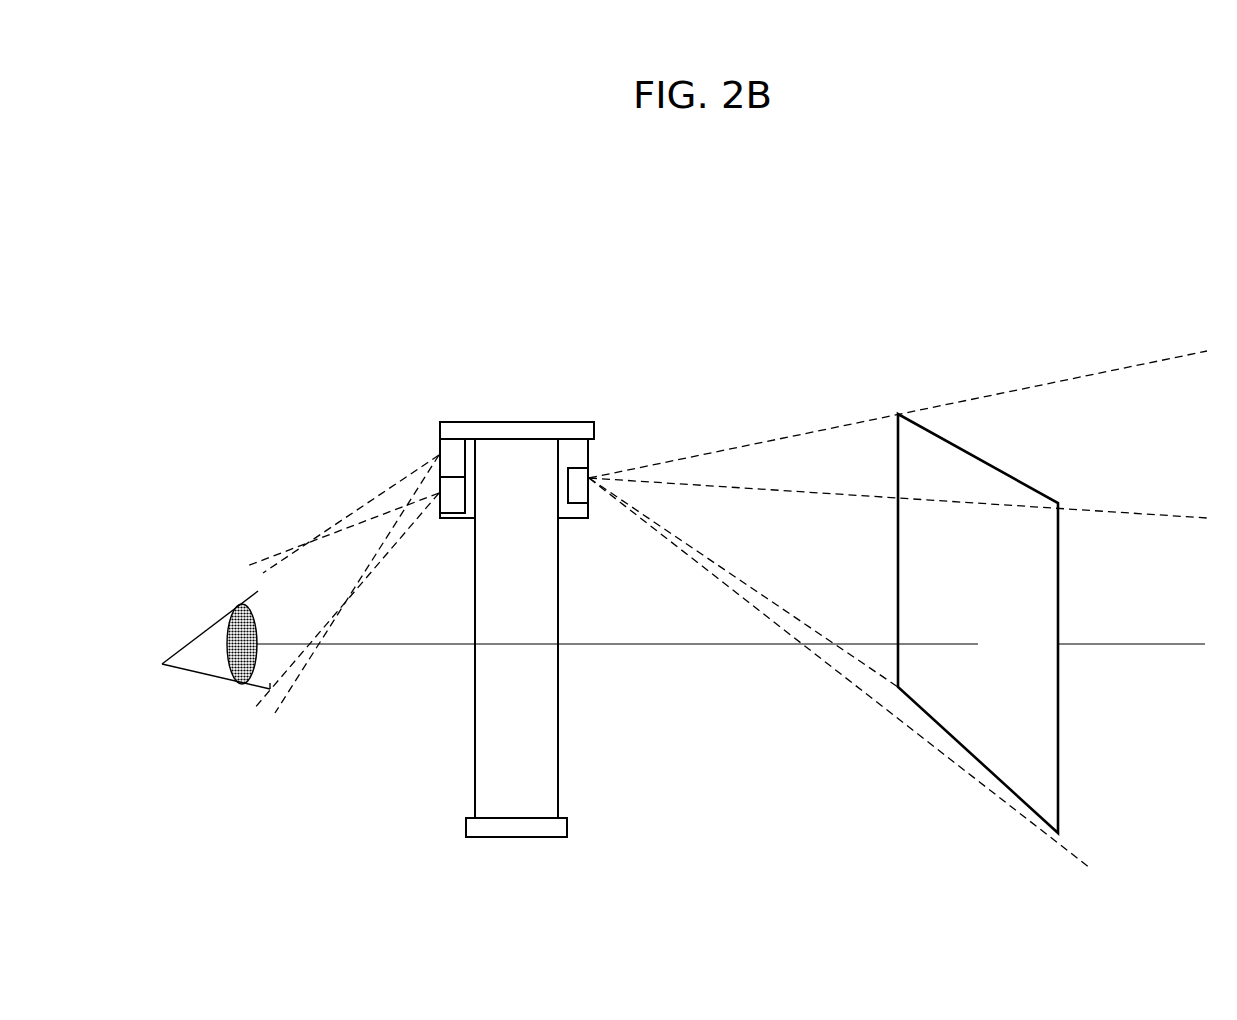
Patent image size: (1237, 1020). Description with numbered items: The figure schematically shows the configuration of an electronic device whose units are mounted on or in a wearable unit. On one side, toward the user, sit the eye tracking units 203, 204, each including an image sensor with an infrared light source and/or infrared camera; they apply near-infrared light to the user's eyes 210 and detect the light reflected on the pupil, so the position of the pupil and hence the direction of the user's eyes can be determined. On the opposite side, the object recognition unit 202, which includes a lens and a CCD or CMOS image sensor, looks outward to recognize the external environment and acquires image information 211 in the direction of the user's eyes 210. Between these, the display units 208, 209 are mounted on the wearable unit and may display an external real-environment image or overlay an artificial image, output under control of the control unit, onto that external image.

The object recognition unit 202 is at (582, 461).
The eye tracking unit 203 is at (453, 438).
The eye tracking unit 204 is at (463, 446).
The display unit 208 is at (545, 737).
The display unit 209 is at (562, 779).
The user's eyes 210 is at (215, 678).
The image information 211 is at (977, 458).